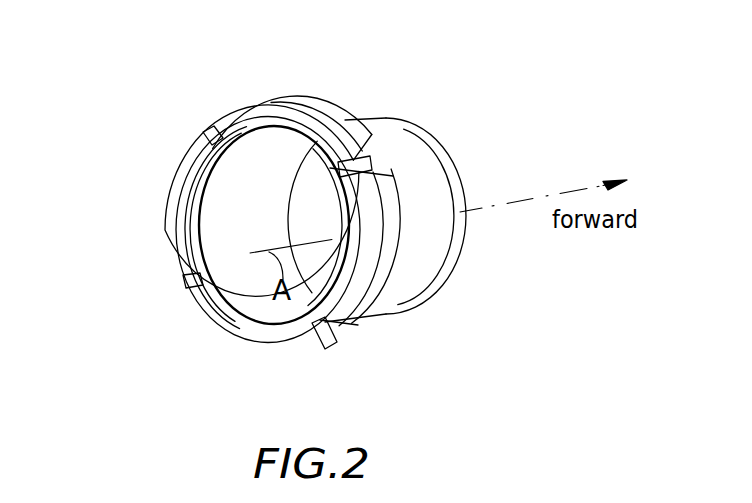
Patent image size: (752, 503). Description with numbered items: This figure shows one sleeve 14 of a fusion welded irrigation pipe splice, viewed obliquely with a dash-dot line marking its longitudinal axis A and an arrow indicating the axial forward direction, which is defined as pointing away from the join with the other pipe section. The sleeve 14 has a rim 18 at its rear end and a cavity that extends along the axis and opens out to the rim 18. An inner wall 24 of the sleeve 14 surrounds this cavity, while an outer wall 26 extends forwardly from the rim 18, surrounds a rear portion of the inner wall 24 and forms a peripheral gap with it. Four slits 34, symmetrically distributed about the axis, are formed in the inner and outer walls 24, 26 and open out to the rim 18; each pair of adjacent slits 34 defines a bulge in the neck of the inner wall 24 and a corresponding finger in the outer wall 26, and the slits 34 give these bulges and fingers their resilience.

The sleeve 14 is at (130, 80).
The rim 18 is at (253, 102).
The outer wall 26 is at (332, 97).
The inner wall 24 is at (402, 116).
The slits 34 is at (198, 116).